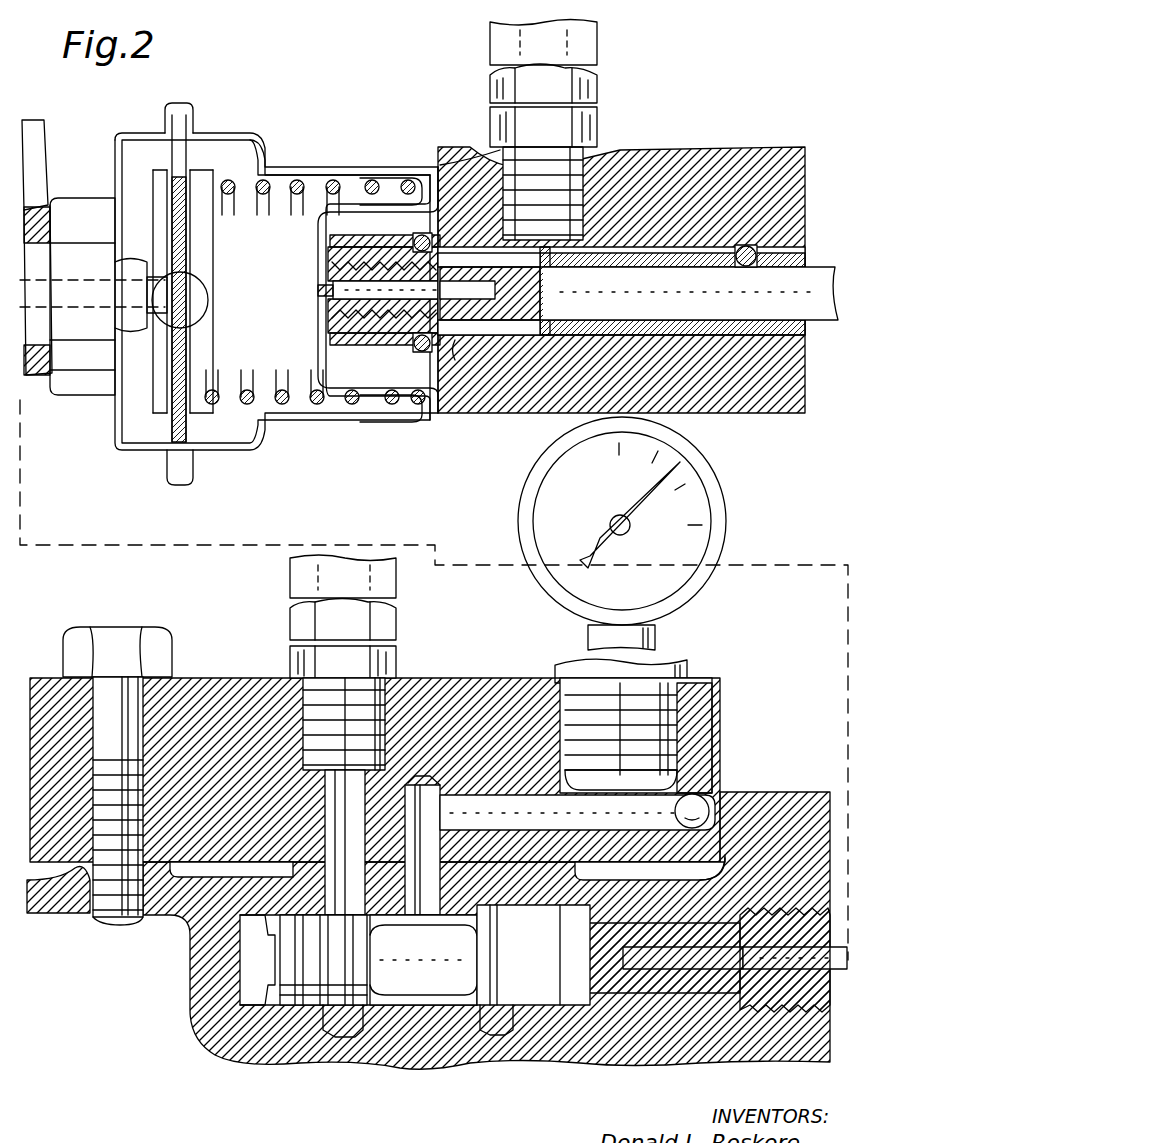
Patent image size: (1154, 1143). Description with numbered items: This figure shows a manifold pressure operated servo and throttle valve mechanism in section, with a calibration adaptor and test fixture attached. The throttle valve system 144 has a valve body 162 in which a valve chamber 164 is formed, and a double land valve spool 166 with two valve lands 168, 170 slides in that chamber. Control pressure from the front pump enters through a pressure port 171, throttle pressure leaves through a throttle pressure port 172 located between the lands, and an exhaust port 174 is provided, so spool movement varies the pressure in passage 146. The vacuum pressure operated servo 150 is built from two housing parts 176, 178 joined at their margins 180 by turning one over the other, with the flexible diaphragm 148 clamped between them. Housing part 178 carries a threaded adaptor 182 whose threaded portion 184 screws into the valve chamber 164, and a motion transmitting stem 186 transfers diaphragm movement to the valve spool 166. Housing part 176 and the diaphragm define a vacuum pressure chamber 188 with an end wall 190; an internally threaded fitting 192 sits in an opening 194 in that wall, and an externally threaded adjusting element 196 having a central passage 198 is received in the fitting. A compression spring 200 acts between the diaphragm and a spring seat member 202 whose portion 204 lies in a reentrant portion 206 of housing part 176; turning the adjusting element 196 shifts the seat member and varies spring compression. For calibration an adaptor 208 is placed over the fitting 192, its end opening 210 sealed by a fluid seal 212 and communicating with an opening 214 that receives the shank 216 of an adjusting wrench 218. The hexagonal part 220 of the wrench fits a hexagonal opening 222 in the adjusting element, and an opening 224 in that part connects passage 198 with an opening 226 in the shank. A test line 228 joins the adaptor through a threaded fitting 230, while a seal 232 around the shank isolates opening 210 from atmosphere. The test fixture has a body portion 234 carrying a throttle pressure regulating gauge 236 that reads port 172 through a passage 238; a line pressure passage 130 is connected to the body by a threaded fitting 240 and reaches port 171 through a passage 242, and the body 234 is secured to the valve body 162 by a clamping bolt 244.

The line pressure passage 130 is at (290, 582).
The throttle valve system 144 is at (42, 118).
The passage 146 is at (590, 636).
The flexible diaphragm 148 is at (200, 135).
The vacuum pressure operated servo 150 is at (290, 150).
The valve body 162 is at (675, 1062).
The valve chamber 164 is at (565, 1008).
The double land valve spool 166 is at (425, 975).
The valve land 168 is at (365, 1025).
The valve land 170 is at (500, 1035).
The pressure port 171 is at (330, 850).
The throttle pressure port 172 is at (450, 800).
The exhaust port 174 is at (500, 880).
The housing part 176 is at (232, 440).
The housing part 178 is at (150, 440).
The margins 180 is at (178, 485).
The threaded adaptor 182 is at (72, 196).
The threaded portion 184 is at (75, 310).
The motion transmitting stem 186 is at (48, 350).
The vacuum pressure chamber 188 is at (270, 430).
The end wall 190 is at (330, 255).
The internally threaded fitting 192 is at (335, 270).
The opening 194 is at (330, 320).
The externally threaded adjusting element 196 is at (380, 345).
The central passage 198 is at (333, 290).
The compression spring 200 is at (300, 405).
The spring seat member 202 is at (335, 185).
The portion 204 is at (420, 172).
The reentrant portion 206 is at (425, 425).
The adaptor 208 is at (620, 150).
The end opening 210 is at (472, 357).
The fluid seal 212 is at (425, 235).
The opening 214 is at (655, 322).
The shank 216 is at (745, 320).
The adjusting wrench 218 is at (826, 265).
The hexagonal part 220 is at (455, 275).
The hexagonal opening 222 is at (428, 250).
The opening 224 is at (515, 320).
The opening 226 is at (590, 253).
The test line 228 is at (588, 45).
The threaded fitting 230 is at (598, 84).
The seal 232 is at (748, 245).
The body portion 234 is at (710, 710).
The throttle pressure regulating gauge 236 is at (520, 535).
The passage 238 is at (690, 790).
The threaded fitting 240 is at (290, 655).
The passage 242 is at (330, 818).
The clamping bolt 244 is at (168, 627).